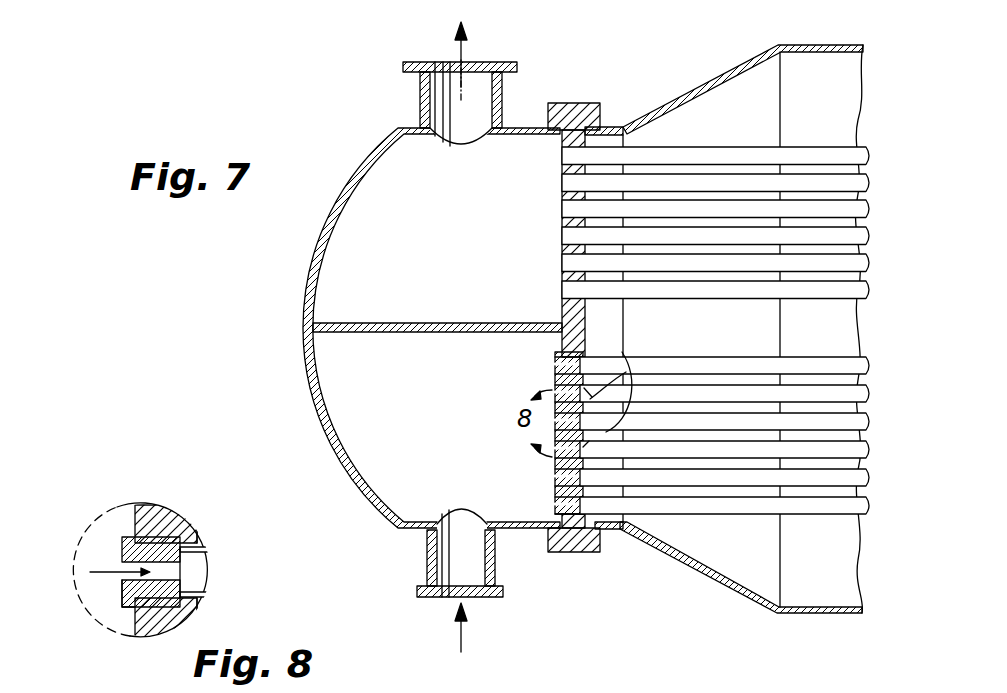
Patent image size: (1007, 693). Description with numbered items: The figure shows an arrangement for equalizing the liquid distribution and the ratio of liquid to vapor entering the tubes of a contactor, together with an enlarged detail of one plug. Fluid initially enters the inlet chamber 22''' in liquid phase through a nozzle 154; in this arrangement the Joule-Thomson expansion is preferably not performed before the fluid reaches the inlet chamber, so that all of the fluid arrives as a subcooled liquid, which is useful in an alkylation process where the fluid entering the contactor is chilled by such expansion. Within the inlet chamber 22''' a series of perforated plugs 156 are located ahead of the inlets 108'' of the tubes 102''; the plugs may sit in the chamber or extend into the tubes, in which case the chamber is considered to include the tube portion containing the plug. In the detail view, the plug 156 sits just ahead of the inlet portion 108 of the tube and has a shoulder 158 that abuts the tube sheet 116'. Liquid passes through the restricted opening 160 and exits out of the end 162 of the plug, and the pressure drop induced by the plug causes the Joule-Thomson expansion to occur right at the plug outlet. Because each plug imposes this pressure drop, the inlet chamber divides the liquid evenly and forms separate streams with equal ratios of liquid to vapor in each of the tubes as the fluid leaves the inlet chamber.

In FIG. 7, the inlet chamber 22''' is at (400, 328).
In FIG. 7, the nozzle 154 is at (427, 563).
In FIG. 7, the perforated plug 156 is at (558, 355).
In FIG. 8, the perforated plug 156 is at (121, 537).
In FIG. 7, the inlet of tube 108'' is at (724, 348).
In FIG. 7, the tube 102'' is at (724, 468).
In FIG. 8, the tube sheet 116' is at (165, 550).
In FIG. 8, the inlet portion of tube 108 is at (226, 579).
In FIG. 8, the end of plug 162 is at (205, 549).
In FIG. 8, the restricted opening 160 is at (128, 578).
In FIG. 8, the shoulder 158 is at (123, 601).